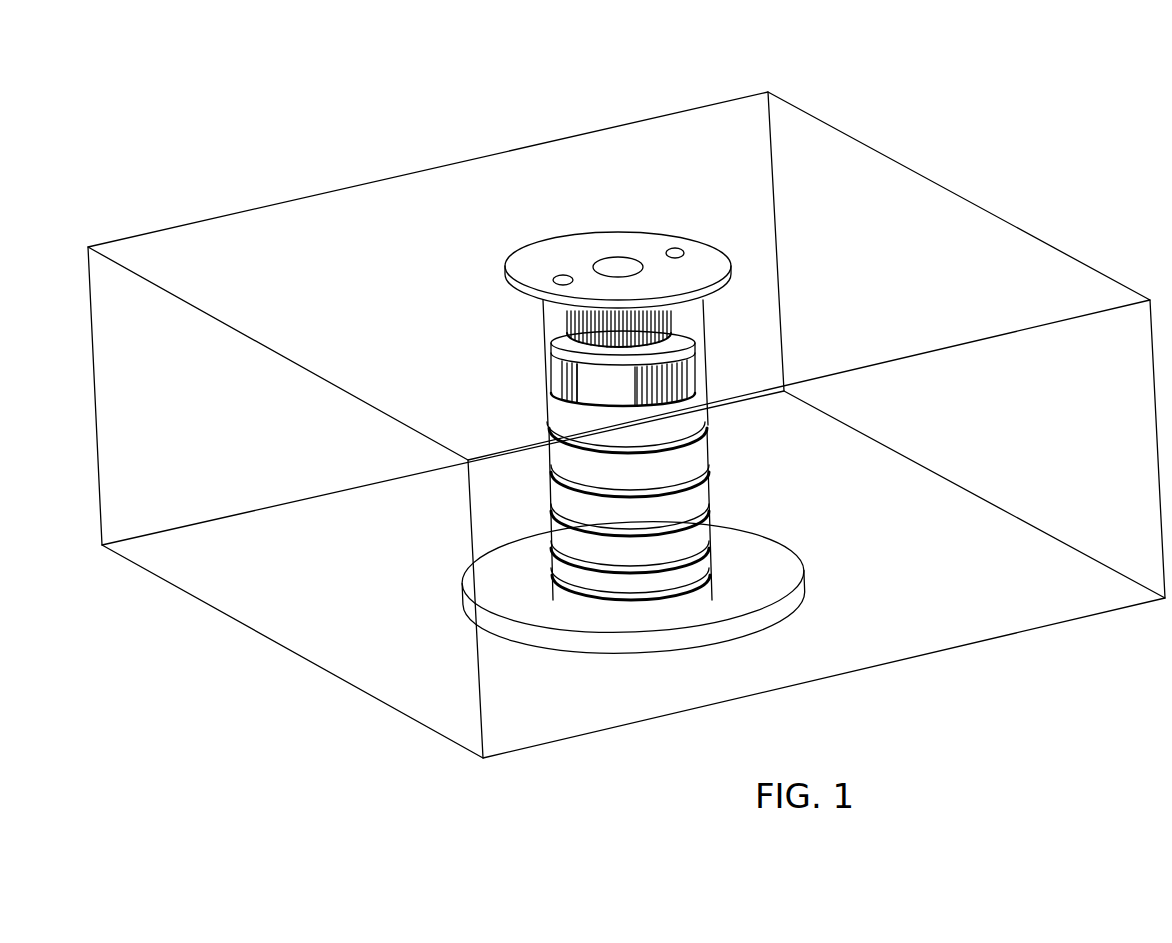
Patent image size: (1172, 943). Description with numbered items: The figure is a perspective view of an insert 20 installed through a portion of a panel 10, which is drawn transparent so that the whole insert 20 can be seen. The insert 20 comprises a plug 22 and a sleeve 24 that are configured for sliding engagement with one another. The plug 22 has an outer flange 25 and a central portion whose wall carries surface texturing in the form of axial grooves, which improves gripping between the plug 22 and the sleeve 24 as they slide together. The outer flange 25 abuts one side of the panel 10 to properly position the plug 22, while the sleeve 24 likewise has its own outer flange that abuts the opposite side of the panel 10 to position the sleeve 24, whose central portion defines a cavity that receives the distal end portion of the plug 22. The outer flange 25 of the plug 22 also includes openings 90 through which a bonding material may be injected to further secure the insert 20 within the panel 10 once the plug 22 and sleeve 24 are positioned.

The panel 10 is at (350, 265).
The insert 20 is at (500, 215).
The plug 22 is at (705, 217).
The sleeve 24 is at (818, 587).
The outer flange 25 is at (717, 260).
The openings 90 is at (562, 268).